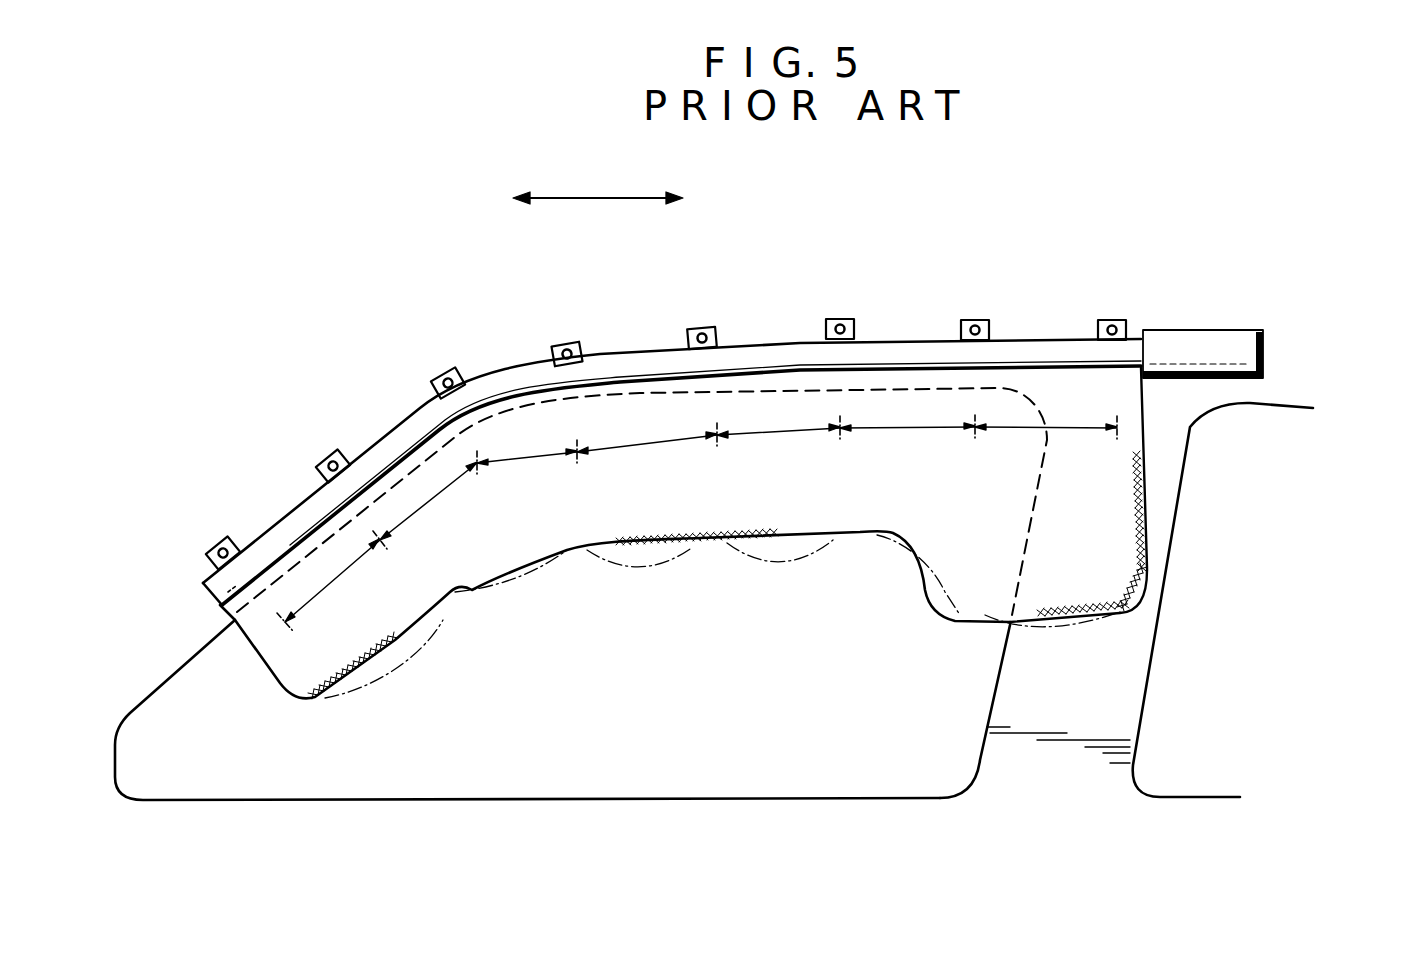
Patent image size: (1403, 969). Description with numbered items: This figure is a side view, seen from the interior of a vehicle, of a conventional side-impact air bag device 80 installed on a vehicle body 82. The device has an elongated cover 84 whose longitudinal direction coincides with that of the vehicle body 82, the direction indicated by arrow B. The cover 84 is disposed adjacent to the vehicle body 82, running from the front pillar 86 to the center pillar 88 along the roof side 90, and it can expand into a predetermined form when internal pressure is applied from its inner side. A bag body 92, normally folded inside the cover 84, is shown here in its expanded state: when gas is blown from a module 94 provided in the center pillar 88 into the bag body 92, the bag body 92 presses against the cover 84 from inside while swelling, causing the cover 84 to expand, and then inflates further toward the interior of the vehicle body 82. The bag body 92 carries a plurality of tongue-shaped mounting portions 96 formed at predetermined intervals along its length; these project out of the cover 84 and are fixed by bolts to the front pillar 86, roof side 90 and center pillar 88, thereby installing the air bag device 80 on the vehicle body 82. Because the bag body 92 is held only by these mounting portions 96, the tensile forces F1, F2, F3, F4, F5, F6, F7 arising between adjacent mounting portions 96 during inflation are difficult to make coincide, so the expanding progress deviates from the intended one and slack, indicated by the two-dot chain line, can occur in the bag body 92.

The air bag device 80 is at (902, 284).
The vehicle body 82 is at (1340, 293).
The cover 84 is at (760, 342).
The front pillar 86 is at (200, 653).
The center pillar 88 is at (990, 690).
The roof side 90 is at (728, 394).
The bag body 92 is at (325, 702).
The module 94 is at (1205, 330).
The mounting portions 96 is at (221, 542).
The arrow B is at (597, 198).
The tensile force F1 is at (362, 556).
The tensile force F2 is at (458, 484).
The tensile force F3 is at (540, 456).
The tensile force F4 is at (646, 446).
The tensile force F5 is at (790, 435).
The tensile force F6 is at (910, 430).
The tensile force F7 is at (1026, 430).